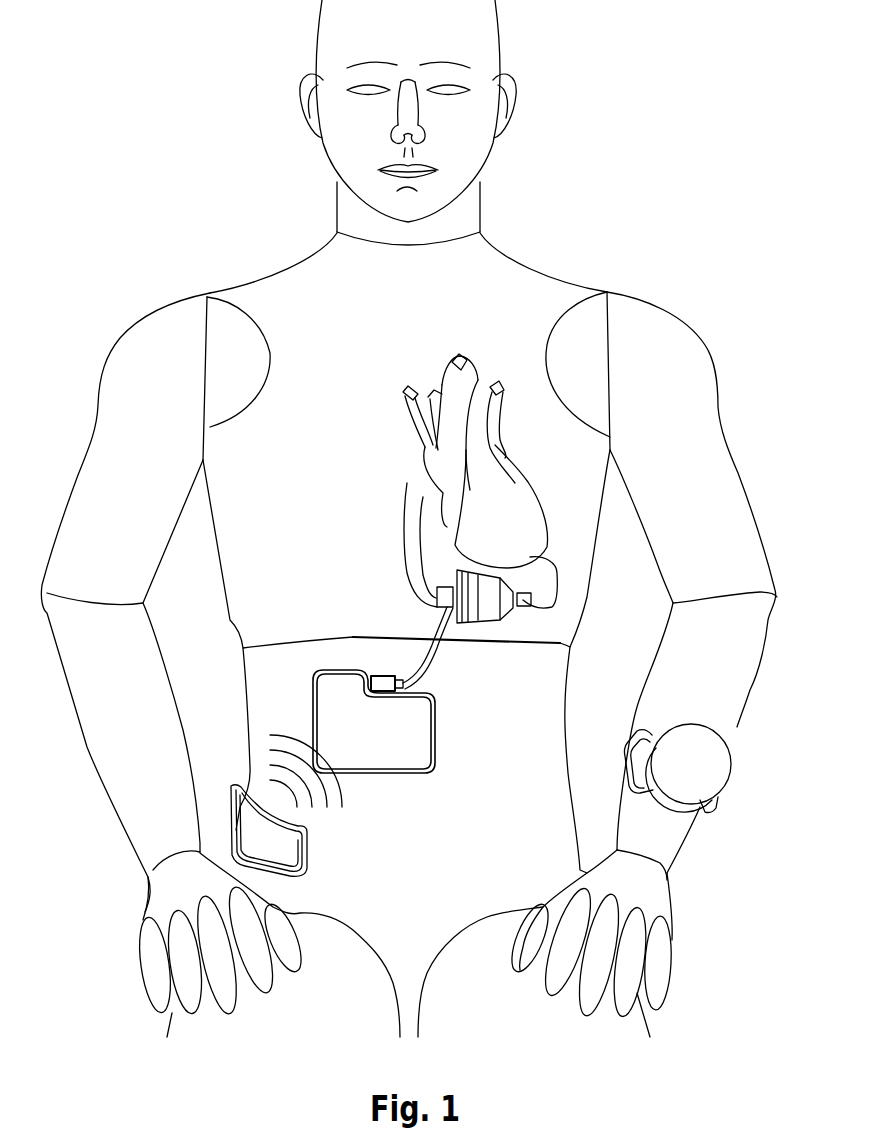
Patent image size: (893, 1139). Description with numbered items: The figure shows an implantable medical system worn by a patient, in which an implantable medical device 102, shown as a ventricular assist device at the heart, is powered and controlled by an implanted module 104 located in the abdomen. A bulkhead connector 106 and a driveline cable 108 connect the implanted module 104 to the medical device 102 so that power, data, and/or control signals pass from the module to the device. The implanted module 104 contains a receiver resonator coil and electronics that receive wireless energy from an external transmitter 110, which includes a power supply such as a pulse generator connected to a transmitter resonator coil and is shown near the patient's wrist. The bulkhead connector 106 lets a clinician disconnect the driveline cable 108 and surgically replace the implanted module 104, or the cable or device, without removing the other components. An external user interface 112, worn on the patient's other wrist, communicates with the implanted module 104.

The implantable medical device 102 is at (383, 507).
The implanted module 104 is at (410, 717).
The bulkhead connector 106 is at (368, 660).
The driveline cable 108 is at (437, 650).
The external transmitter 110 is at (230, 832).
The external user interface 112 is at (708, 773).